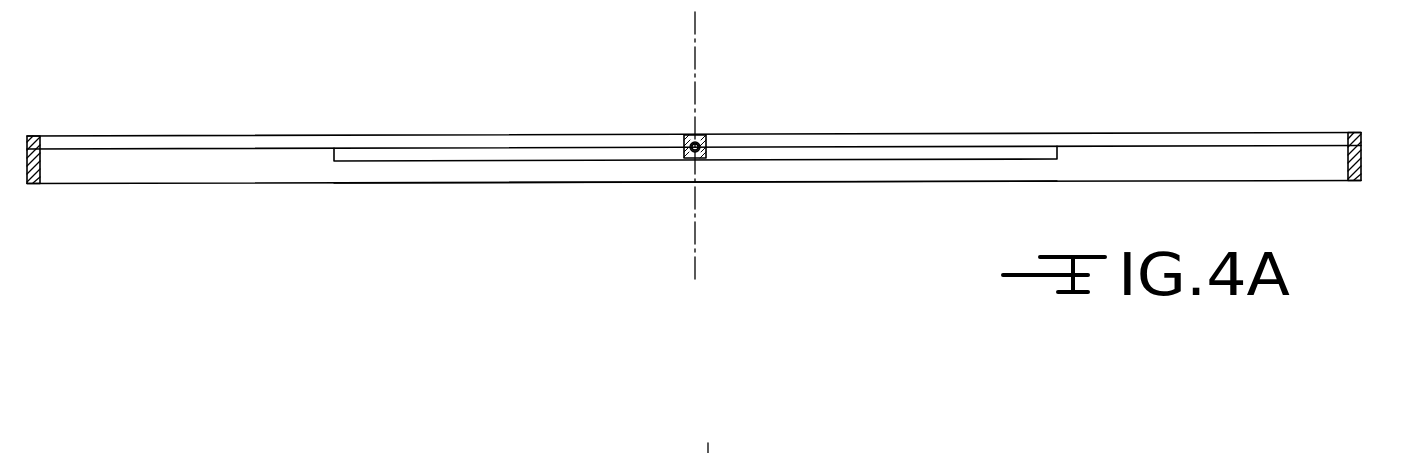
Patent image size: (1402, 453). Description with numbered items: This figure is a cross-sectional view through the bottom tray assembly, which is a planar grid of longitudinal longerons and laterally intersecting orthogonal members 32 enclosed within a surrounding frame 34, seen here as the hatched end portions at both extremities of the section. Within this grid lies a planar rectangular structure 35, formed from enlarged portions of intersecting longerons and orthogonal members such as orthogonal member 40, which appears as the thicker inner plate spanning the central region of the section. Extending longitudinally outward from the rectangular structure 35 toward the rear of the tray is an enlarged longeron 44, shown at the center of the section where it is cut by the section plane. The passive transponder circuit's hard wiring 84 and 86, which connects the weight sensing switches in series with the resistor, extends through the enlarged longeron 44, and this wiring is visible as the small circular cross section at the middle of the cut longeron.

The orthogonal member 32 is at (1242, 137).
The frame 34 is at (33, 185).
The planar rectangular structure 35 is at (578, 168).
The orthogonal member 40 is at (777, 152).
The enlarged longeron 44 is at (707, 134).
The hard wiring 84 is at (695, 147).
The hard wiring 86 is at (682, 134).